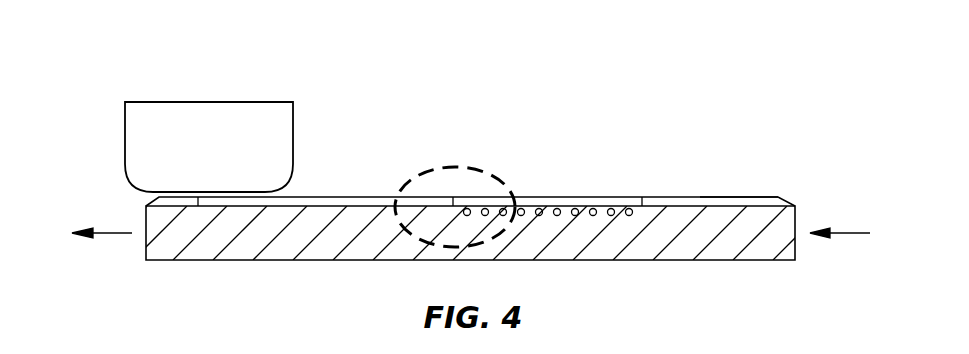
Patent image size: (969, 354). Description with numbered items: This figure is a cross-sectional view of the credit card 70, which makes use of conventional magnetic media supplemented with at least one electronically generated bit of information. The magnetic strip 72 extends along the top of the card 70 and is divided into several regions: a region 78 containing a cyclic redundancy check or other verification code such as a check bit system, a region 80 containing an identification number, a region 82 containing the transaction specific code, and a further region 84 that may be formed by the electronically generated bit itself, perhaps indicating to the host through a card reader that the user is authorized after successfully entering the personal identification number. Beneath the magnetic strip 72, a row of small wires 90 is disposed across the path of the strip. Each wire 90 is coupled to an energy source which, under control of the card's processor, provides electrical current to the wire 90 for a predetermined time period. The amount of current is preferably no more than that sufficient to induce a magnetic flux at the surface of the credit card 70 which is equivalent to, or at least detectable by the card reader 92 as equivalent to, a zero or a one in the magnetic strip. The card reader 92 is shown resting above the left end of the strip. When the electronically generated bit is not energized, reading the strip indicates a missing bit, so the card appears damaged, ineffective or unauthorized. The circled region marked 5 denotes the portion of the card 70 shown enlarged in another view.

The card 70 is at (682, 116).
The magnetic strip 72 is at (299, 197).
The region containing a cyclic redundancy check 78 is at (153, 202).
The region containing an identification number 80 is at (358, 198).
The region containing the transaction specific code 82 is at (618, 198).
The region of the electronically generated bit 84 is at (693, 202).
The wire 90 is at (592, 208).
The card reader 92 is at (190, 153).
The view direction of FIG. 5 is at (465, 167).